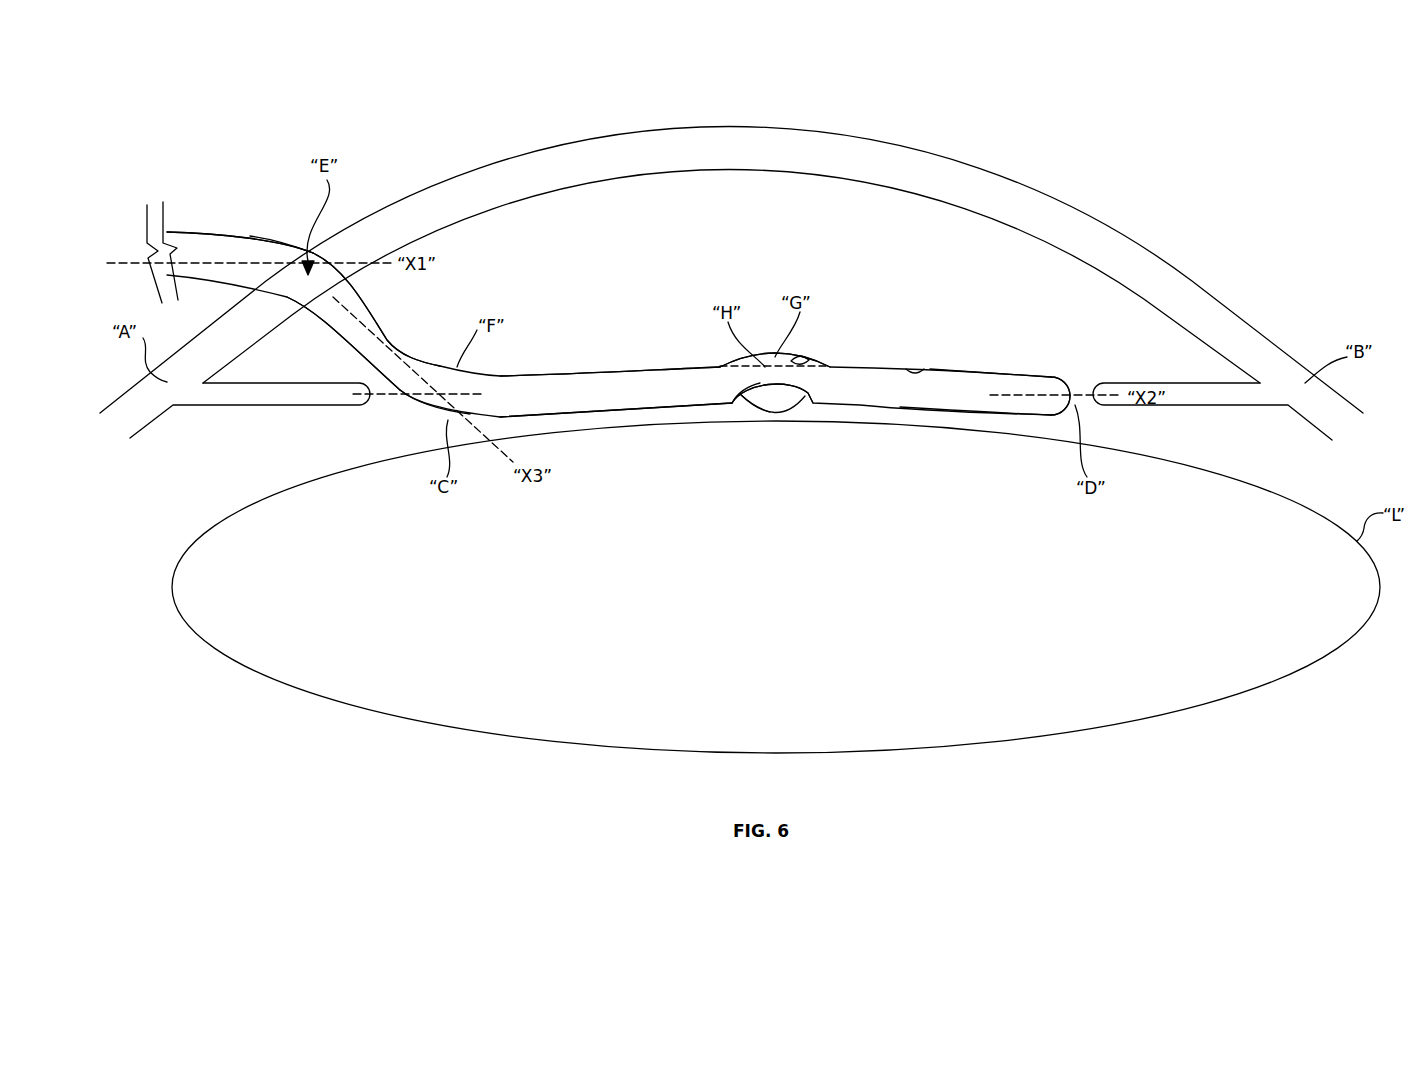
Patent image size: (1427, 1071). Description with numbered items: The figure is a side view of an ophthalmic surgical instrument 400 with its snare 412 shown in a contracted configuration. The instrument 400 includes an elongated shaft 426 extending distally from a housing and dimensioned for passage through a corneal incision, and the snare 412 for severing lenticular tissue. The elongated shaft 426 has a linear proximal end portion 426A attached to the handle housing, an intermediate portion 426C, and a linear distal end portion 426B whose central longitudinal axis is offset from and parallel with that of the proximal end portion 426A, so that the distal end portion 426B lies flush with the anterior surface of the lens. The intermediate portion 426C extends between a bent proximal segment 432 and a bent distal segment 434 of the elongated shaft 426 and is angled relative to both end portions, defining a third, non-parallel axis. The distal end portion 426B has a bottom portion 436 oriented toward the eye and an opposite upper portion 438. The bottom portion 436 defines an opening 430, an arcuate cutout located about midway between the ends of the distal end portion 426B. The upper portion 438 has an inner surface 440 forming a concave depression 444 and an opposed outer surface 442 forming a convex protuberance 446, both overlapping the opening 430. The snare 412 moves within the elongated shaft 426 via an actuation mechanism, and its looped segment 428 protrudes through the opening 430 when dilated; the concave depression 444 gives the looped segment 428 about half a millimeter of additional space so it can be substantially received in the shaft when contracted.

The ophthalmic surgical instrument 400 is at (232, 155).
The elongated shaft 426 is at (185, 214).
The proximal end portion 426A is at (240, 248).
The distal end portion 426B is at (587, 387).
The intermediate portion 426C is at (390, 340).
The bent proximal segment 432 is at (270, 237).
The bent distal segment 434 is at (430, 410).
The bottom portion 436 is at (988, 415).
The upper portion 438 is at (960, 372).
The inner surface 440 is at (922, 368).
The outer surface 442 is at (1033, 375).
The concave depression 444 is at (806, 357).
The convex protuberance 446 is at (720, 363).
The looped segment 428 is at (790, 420).
The opening 430 is at (727, 411).
The snare 412 is at (743, 418).